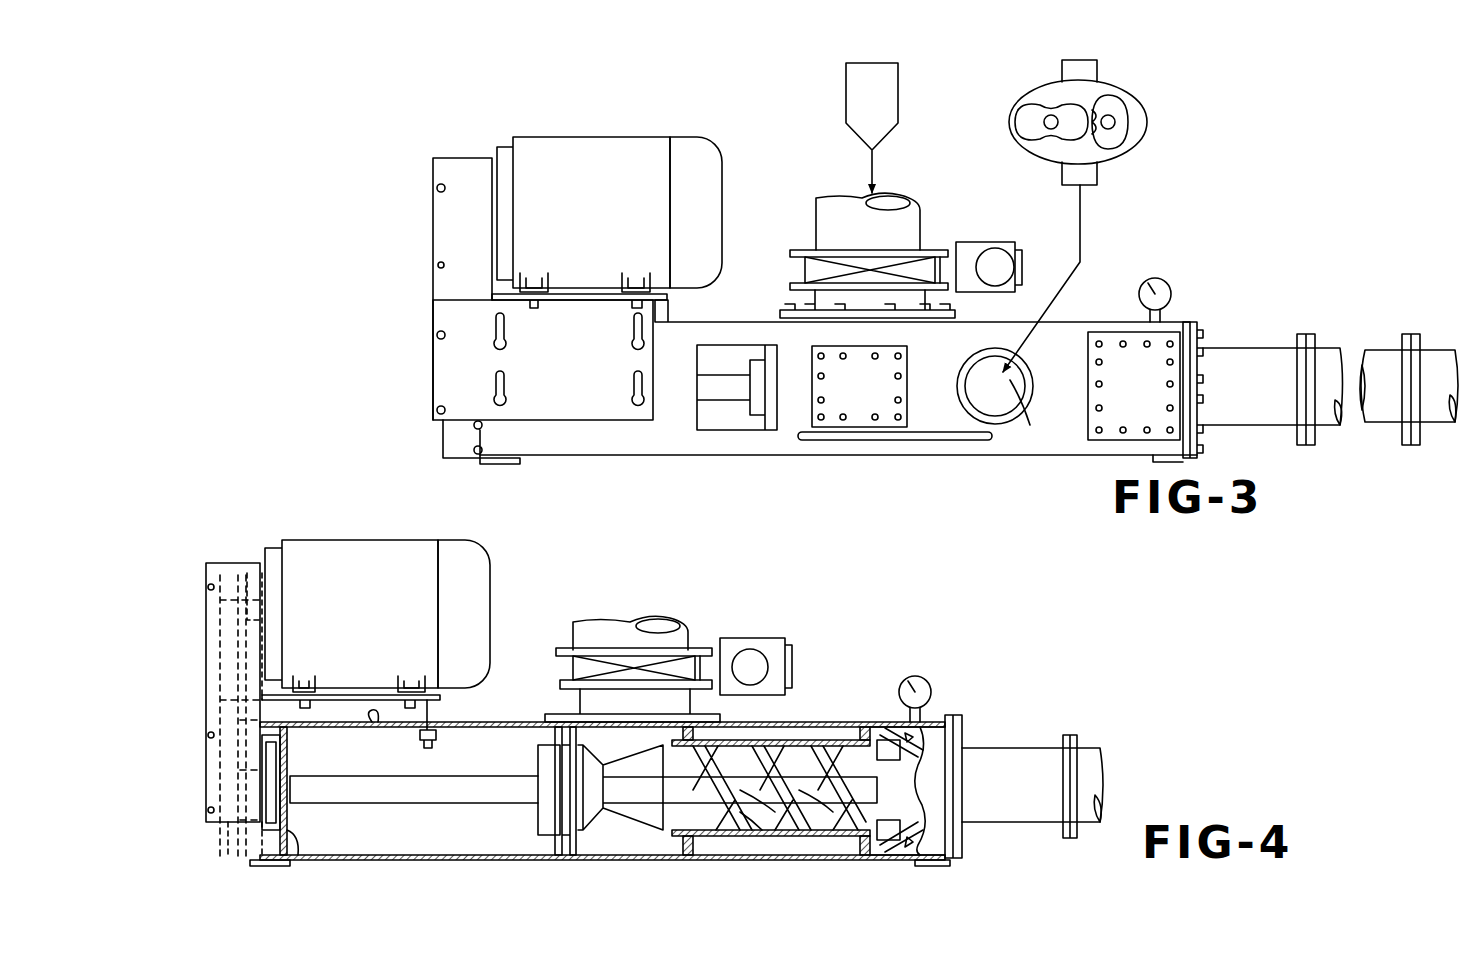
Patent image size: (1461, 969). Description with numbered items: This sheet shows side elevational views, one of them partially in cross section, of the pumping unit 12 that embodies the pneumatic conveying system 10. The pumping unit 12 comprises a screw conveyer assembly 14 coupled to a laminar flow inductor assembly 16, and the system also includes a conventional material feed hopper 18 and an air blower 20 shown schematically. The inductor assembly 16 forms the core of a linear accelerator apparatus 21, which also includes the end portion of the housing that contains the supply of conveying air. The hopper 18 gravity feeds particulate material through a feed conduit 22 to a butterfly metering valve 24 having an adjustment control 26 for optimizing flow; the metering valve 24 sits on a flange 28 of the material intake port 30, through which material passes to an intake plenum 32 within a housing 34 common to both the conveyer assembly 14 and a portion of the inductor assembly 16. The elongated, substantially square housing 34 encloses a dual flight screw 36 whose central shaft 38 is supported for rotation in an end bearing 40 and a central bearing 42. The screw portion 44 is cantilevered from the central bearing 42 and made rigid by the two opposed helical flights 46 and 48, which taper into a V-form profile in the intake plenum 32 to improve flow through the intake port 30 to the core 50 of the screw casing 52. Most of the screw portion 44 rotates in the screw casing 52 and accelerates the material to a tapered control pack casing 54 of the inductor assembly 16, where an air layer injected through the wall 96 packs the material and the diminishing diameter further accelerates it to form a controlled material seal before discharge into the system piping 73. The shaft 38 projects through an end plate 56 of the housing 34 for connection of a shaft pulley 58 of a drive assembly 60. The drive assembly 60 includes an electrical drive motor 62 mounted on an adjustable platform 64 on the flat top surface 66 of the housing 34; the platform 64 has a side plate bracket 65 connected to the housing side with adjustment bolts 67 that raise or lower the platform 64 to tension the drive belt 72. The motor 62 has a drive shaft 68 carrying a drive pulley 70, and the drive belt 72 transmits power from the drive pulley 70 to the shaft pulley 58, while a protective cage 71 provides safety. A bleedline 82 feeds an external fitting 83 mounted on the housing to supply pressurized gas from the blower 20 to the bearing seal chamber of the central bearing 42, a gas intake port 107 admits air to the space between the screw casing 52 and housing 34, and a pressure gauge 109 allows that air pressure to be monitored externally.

In FIG. 3, the pneumatic conveying system 10 is at (1153, 226).
In FIG. 4, the pneumatic conveying system 10 is at (928, 664).
In FIG. 3, the particulate material pumping unit 12 is at (738, 318).
In FIG. 4, the particulate material pumping unit 12 is at (482, 716).
In FIG. 3, the screw conveyer assembly 14 is at (940, 405).
In FIG. 4, the screw conveyer assembly 14 is at (836, 716).
In FIG. 3, the inductor assembly 16 is at (1272, 346).
In FIG. 4, the inductor assembly 16 is at (1007, 822).
In FIG. 3, the material feed hopper 18 is at (888, 100).
In FIG. 3, the air blower 20 is at (1137, 126).
In FIG. 3, the linear accelerator apparatus 21 is at (1222, 402).
In FIG. 4, the linear accelerator apparatus 21 is at (968, 752).
In FIG. 3, the feed conduit 22 is at (905, 198).
In FIG. 4, the feed conduit 22 is at (622, 626).
In FIG. 3, the butterfly metering valve 24 is at (925, 264).
In FIG. 4, the butterfly metering valve 24 is at (690, 656).
In FIG. 3, the adjustment control 26 is at (983, 252).
In FIG. 4, the adjustment control 26 is at (748, 640).
In FIG. 3, the flange 28 is at (786, 256).
In FIG. 4, the flange 28 is at (545, 684).
In FIG. 3, the material intake port 30 is at (915, 302).
In FIG. 4, the material intake port 30 is at (585, 700).
In FIG. 4, the intake plenum 32 is at (615, 838).
In FIG. 4, the housing 34 is at (848, 722).
In FIG. 4, the dual flight screw 36 is at (715, 820).
In FIG. 4, the central shaft 38 is at (372, 803).
In FIG. 4, the end bearing 40 is at (276, 786).
In FIG. 4, the central bearing 42 is at (528, 810).
In FIG. 4, the screw portion 44 is at (778, 762).
In FIG. 4, the helical flight 46 is at (754, 816).
In FIG. 4, the helical flight 48 is at (800, 816).
In FIG. 4, the core 50 is at (822, 842).
In FIG. 4, the screw casing 52 is at (745, 840).
In FIG. 4, the tapered control pack casing 54 is at (905, 778).
In FIG. 4, the end plate 56 is at (292, 832).
In FIG. 4, the shaft pulley 58 is at (240, 862).
In FIG. 3, the drive assembly 60 is at (562, 133).
In FIG. 4, the drive assembly 60 is at (318, 536).
In FIG. 3, the electrical drive motor 62 is at (694, 136).
In FIG. 4, the electrical drive motor 62 is at (480, 572).
In FIG. 3, the adjustable platform 64 is at (570, 294).
In FIG. 4, the adjustable platform 64 is at (445, 700).
In FIG. 3, the side plate bracket 65 is at (445, 378).
In FIG. 3, the flat top surface 66 is at (683, 322).
In FIG. 4, the flat top surface 66 is at (374, 724).
In FIG. 3, the adjustment bolts 67 is at (636, 342).
In FIG. 4, the drive shaft 68 is at (262, 570).
In FIG. 4, the drive pulley 70 is at (247, 572).
In FIG. 3, the protective cage 71 is at (432, 212).
In FIG. 4, the protective cage 71 is at (207, 594).
In FIG. 4, the drive belt 72 is at (222, 672).
In FIG. 3, the system piping 73 is at (1428, 350).
In FIG. 3, the bleedline 82 is at (777, 432).
In FIG. 3, the external fitting 83 is at (886, 442).
In FIG. 4, the wall 96 is at (925, 822).
In FIG. 3, the gas intake port 107 is at (1018, 410).
In FIG. 3, the pressure gauge 109 is at (1164, 285).